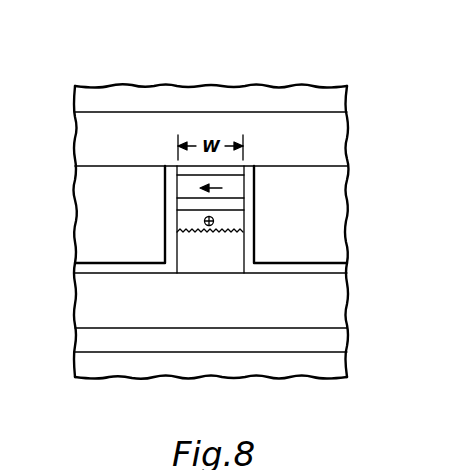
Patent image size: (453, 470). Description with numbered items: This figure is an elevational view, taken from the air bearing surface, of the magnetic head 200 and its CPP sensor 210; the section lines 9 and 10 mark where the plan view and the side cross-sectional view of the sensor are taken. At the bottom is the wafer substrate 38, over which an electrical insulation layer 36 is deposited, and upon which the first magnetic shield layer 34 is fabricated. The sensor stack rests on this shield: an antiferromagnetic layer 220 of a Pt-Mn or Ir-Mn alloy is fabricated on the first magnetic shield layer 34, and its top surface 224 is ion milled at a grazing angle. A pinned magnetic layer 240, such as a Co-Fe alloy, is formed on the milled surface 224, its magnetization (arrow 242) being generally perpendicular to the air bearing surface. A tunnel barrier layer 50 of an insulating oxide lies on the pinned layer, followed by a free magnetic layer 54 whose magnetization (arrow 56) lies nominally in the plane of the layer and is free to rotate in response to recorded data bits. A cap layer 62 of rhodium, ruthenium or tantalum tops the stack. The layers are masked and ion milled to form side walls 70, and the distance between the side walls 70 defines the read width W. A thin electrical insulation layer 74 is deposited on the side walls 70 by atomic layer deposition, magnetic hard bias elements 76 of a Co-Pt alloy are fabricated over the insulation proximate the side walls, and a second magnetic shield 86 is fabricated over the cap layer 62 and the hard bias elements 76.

The magnetic head 200 is at (112, 81).
The CPP sensor 210 is at (151, 85).
The section lines 10- 10 is at (212, 80).
The section lines 9- 9 is at (70, 232).
The cap layer 62 is at (187, 173).
The second magnetic shield 86 is at (320, 146).
The magnetic hard bias elements 76 is at (86, 199).
The free magnetic layer 54 is at (180, 191).
The arrow indicating magnetization direction of free magnetic layer 56 is at (222, 188).
The tunnel barrier layer 50 is at (180, 200).
The pinned magnetic layer 240 is at (246, 210).
The arrow indicating magnetization direction of pinned magnetic layer 242 is at (200, 217).
The top surface of the AFM layer 224 is at (232, 228).
The side walls 70 is at (177, 247).
The electrical insulation layer 74 is at (118, 267).
The antiferromagnetic (AFM) layer 220 is at (203, 265).
The first magnetic shield layer 34 is at (316, 318).
The electrical insulation layer 36 is at (342, 341).
The wafer substrate 38 is at (342, 369).